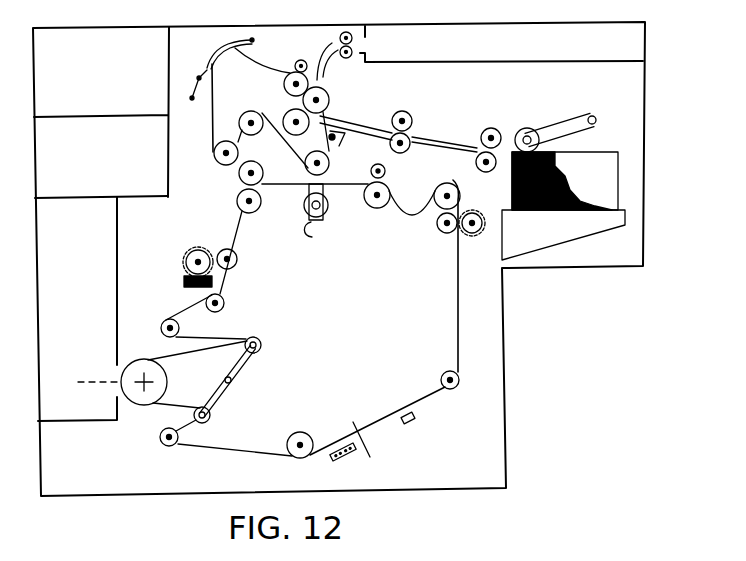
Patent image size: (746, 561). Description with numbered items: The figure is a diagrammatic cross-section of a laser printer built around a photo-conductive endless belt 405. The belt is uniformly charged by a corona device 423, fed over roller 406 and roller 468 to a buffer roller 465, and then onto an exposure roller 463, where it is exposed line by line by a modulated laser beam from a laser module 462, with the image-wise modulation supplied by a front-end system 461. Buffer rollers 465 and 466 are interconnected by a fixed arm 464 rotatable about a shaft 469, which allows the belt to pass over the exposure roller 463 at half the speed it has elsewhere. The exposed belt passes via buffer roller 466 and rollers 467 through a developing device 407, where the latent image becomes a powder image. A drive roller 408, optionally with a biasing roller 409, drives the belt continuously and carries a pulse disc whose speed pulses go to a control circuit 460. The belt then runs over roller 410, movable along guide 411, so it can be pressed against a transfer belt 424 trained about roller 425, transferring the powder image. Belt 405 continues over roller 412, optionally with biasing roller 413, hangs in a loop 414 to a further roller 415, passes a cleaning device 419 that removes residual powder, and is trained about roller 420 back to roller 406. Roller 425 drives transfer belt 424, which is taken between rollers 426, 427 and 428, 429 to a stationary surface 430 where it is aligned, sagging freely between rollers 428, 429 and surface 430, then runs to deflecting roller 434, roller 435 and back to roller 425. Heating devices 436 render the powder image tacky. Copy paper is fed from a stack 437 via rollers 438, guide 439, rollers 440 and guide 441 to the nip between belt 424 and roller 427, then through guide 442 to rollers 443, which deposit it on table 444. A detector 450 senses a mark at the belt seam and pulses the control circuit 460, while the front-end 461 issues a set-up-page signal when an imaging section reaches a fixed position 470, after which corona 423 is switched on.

The endless belt 405 is at (457, 320).
The roller 406 is at (303, 459).
The developing device 407 is at (188, 254).
The drive roller 408 is at (236, 203).
The biasing roller 409 is at (240, 181).
The roller 410 is at (304, 207).
The guide 411 is at (312, 237).
The roller 412 is at (373, 207).
The biasing roller 413 is at (386, 172).
The loop 414 is at (404, 214).
The further roller 415 is at (455, 180).
The cleaning device 419 is at (471, 237).
The roller 420 is at (458, 377).
The corona device 423 is at (348, 457).
The transfer belt 424 is at (212, 131).
The roller 425 is at (305, 165).
The roller 426 is at (290, 117).
The roller 427 is at (327, 102).
The roller 428 is at (284, 84).
The roller 429 is at (301, 60).
The stationary surface 430 is at (211, 50).
The deflecting roller 434 is at (214, 156).
The roller 435 is at (253, 111).
The heating devices 436 is at (334, 140).
The stack 437 is at (582, 160).
The rollers 438 is at (492, 129).
The guide 439 is at (430, 139).
The rollers 440 is at (411, 136).
The guide 441 is at (348, 119).
The guide 442 is at (322, 45).
The rollers 443 is at (344, 30).
The table 444 is at (499, 52).
The detector 450 is at (412, 425).
The control circuit 460 is at (103, 91).
The front-end system 461 is at (103, 175).
The laser module 462 is at (87, 275).
The exposure roller 463 is at (153, 382).
The fixed arm 464 is at (223, 397).
The buffer roller 465 is at (209, 418).
The buffer roller 466 is at (256, 337).
The rollers 467 is at (205, 303).
The roller 468 is at (160, 441).
The shaft 469 is at (231, 380).
The fixed position 470 is at (375, 450).